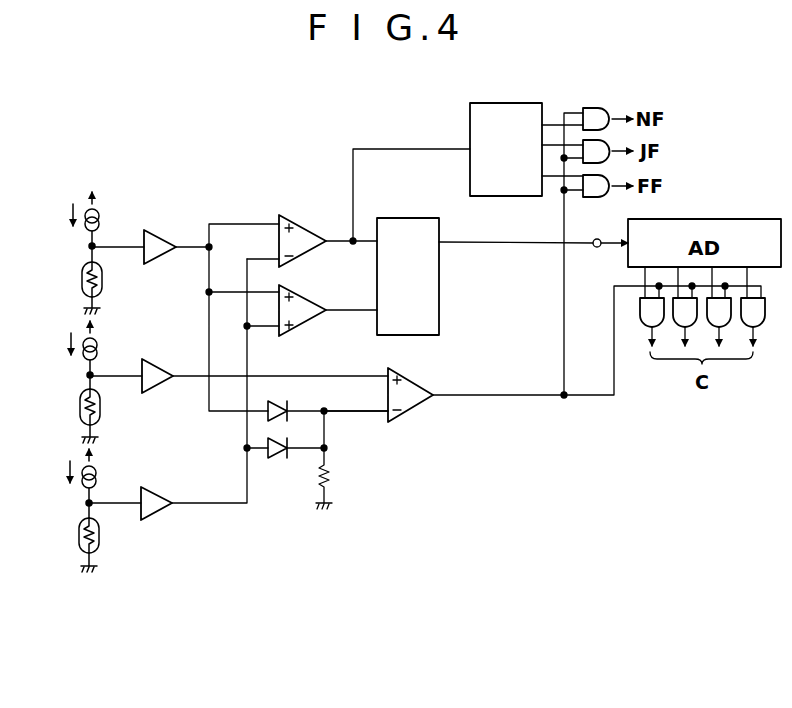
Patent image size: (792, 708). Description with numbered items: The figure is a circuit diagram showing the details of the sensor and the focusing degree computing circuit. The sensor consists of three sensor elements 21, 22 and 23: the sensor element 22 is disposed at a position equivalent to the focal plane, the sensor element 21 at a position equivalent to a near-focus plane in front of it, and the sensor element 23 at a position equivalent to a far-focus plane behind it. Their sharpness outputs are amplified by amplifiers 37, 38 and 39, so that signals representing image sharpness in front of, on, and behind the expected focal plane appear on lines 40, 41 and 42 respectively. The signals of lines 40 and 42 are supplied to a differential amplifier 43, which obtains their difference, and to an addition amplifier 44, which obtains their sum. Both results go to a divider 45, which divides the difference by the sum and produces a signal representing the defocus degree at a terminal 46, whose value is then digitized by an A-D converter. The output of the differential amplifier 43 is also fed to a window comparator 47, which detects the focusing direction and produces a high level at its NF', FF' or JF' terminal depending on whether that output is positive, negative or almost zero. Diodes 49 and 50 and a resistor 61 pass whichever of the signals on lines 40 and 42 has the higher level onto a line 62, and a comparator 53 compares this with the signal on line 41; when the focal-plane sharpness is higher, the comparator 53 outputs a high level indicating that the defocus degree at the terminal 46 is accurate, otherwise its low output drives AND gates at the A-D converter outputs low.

The sensor element 21 is at (80, 283).
The sensor element 22 is at (78, 407).
The sensor element 23 is at (78, 527).
The amplifier 37 is at (152, 232).
The amplifier 38 is at (152, 362).
The amplifier 39 is at (151, 490).
The line 40 is at (187, 250).
The line 41 is at (188, 379).
The line 42 is at (184, 507).
The differential amplifier 43 is at (296, 218).
The addition amplifier 44 is at (303, 290).
The divider 45 is at (400, 218).
The terminal 46 is at (594, 258).
The window comparator 47 is at (503, 103).
The diode 49 is at (283, 399).
The diode 50 is at (272, 440).
The comparator 53 is at (412, 380).
The resistor 61 is at (318, 473).
The line 62 is at (362, 414).